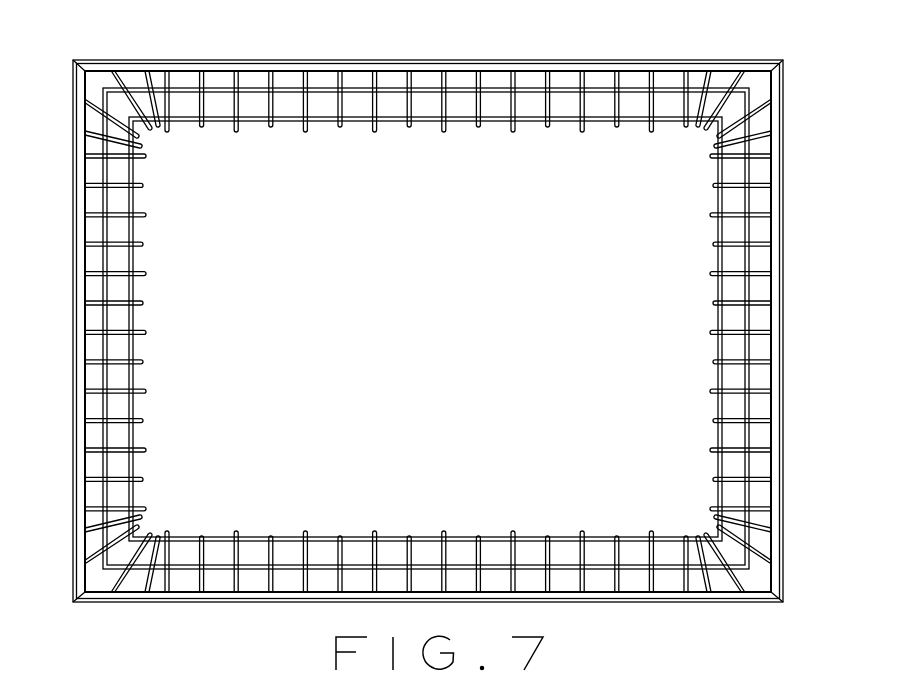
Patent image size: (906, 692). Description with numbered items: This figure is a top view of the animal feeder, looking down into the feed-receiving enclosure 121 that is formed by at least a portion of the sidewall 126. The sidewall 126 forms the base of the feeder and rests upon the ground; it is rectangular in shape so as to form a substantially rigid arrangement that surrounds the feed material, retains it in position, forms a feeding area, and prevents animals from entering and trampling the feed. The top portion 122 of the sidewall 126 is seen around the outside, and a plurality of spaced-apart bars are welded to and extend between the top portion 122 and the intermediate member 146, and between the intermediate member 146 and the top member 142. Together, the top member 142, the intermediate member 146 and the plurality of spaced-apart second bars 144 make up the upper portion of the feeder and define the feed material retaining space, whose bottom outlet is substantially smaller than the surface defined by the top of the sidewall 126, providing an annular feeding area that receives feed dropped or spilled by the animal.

The feed-receiving enclosure 121 is at (435, 363).
The top portion of the sidewall 122 is at (115, 62).
The sidewall 126 is at (100, 260).
The top member 142 is at (703, 62).
The second bars 144 is at (733, 221).
The intermediate member 146 is at (253, 125).